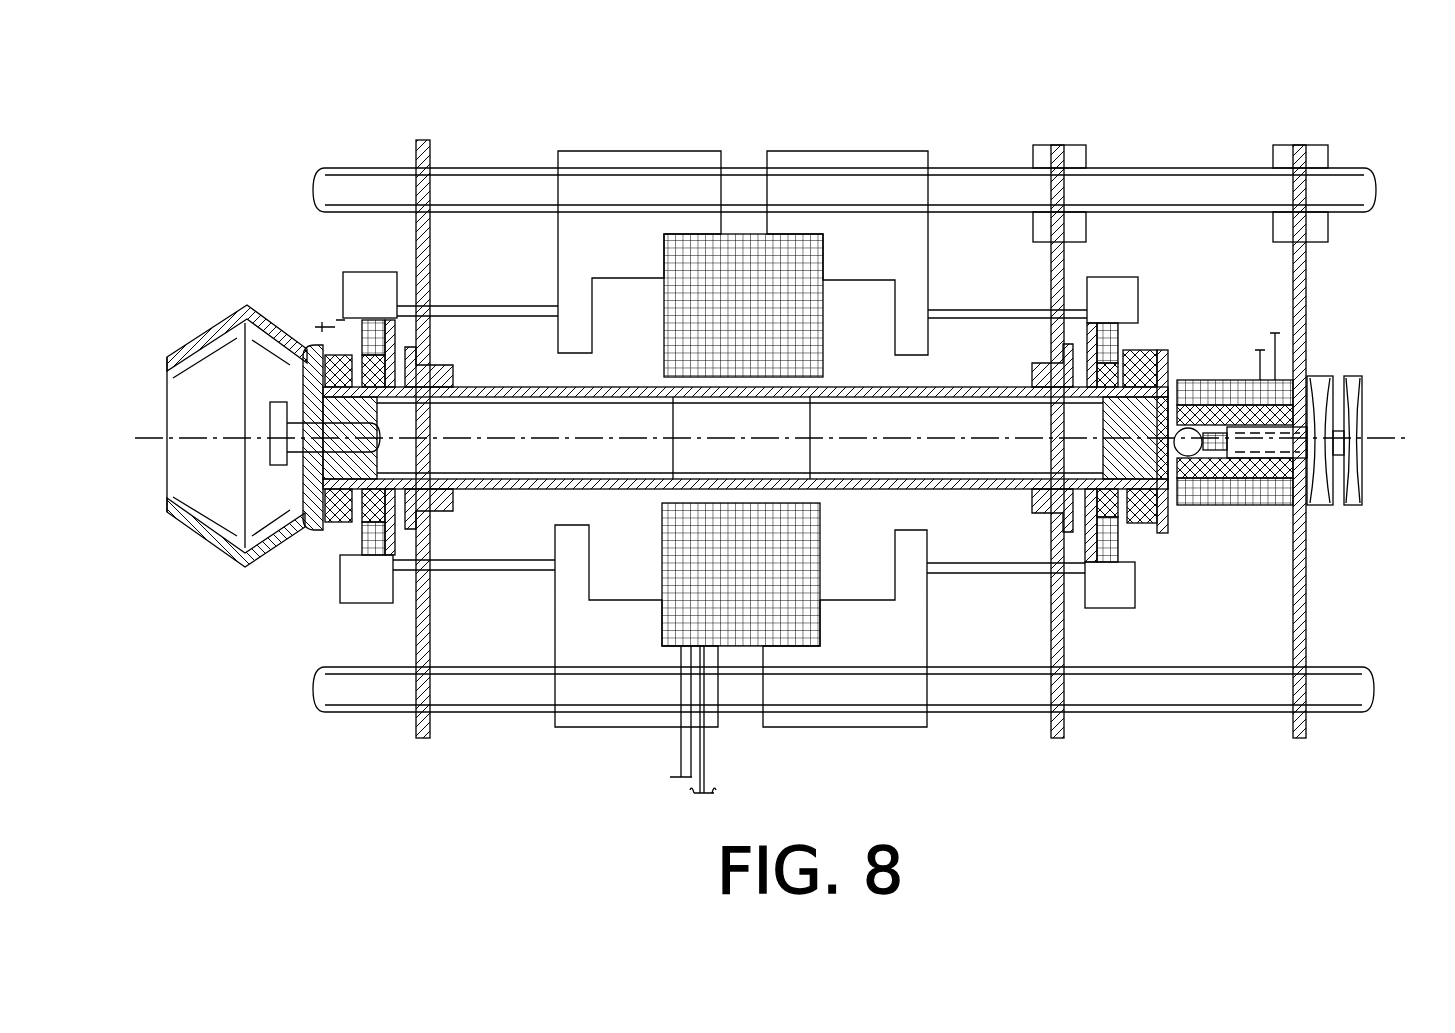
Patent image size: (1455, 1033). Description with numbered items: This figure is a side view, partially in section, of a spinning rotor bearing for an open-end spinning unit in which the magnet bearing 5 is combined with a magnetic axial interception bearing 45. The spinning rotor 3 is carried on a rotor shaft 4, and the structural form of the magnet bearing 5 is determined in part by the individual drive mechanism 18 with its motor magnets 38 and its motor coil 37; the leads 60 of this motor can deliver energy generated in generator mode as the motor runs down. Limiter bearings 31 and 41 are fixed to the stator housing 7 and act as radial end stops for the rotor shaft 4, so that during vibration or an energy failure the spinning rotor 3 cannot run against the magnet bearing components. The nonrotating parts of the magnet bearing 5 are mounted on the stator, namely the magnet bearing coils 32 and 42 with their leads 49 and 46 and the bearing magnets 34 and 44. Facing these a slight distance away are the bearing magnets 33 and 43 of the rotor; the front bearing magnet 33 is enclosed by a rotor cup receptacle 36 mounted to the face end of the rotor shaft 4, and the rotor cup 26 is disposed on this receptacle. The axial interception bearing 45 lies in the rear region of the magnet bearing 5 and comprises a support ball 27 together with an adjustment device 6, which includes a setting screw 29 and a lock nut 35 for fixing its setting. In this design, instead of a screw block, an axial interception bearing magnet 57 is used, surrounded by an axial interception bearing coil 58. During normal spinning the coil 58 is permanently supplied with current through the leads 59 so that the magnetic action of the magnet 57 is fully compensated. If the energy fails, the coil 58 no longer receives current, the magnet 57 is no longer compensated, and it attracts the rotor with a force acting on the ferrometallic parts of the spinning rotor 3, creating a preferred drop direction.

The spinning rotor 3 is at (158, 411).
The rotor shaft 4 is at (935, 488).
The magnet bearing 5 is at (1114, 131).
The adjustment device 6 is at (1359, 527).
The stator housing 7 is at (1128, 287).
The individual drive mechanism 18 is at (748, 148).
The rotor cup 26 is at (205, 545).
The support ball 27 is at (1187, 448).
The setting screw 29 is at (1357, 378).
The limiter bearing 31 is at (440, 372).
The magnet bearing coil 32 is at (357, 540).
The front bearing magnet of the rotor 33 is at (318, 520).
The bearing magnet 34 is at (322, 355).
The lock nut 35 is at (1315, 378).
The rotor cup receptacle 36 is at (317, 357).
The motor coil 37 is at (805, 648).
The motor magnets 38 is at (700, 457).
The limiter bearing 41 is at (1032, 508).
The magnet bearing coil 42 is at (1122, 330).
The rear bearing magnet of the rotor 43 is at (1140, 523).
The bearing magnet 44 is at (1167, 362).
The axial interception bearing 45 is at (1225, 627).
The lead 46 is at (1162, 345).
The lead 49 is at (340, 325).
The axial interception bearing magnet 57 is at (1240, 480).
The axial interception bearing coil 58 is at (1300, 517).
The leads 59 is at (1263, 363).
The leads of the motor 60 is at (700, 790).